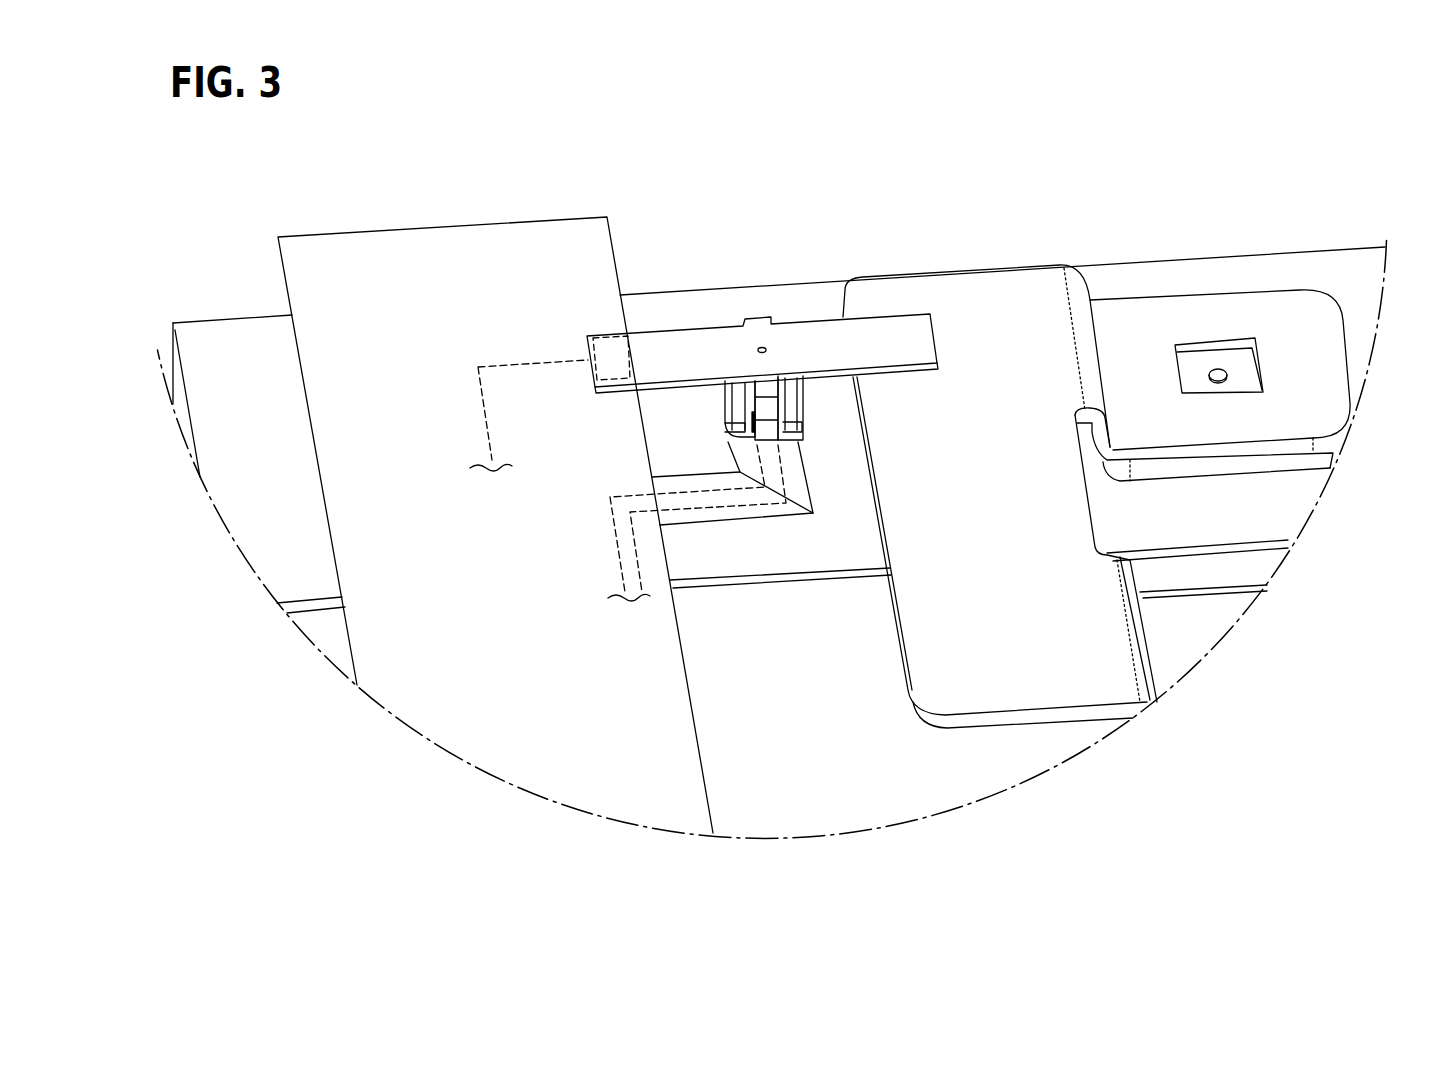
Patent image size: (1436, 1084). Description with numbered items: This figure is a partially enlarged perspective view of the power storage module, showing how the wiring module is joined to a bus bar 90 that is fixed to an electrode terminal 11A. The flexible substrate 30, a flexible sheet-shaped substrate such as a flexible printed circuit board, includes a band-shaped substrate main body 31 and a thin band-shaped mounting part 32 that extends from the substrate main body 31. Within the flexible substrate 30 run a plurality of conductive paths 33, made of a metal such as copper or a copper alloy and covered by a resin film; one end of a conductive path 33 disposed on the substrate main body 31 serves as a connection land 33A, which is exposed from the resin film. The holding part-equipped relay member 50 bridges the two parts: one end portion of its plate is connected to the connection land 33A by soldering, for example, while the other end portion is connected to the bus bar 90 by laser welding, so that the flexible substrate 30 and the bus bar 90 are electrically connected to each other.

The flexible substrate 30 is at (758, 888).
The substrate main body 31 is at (637, 778).
The mounting part 32 is at (747, 513).
The conductive path 33 is at (515, 360).
The connection land 33A is at (610, 337).
The holding part-equipped relay member 50 is at (700, 348).
The bus bar 90 is at (985, 297).
The electrode terminal 11A is at (1290, 462).